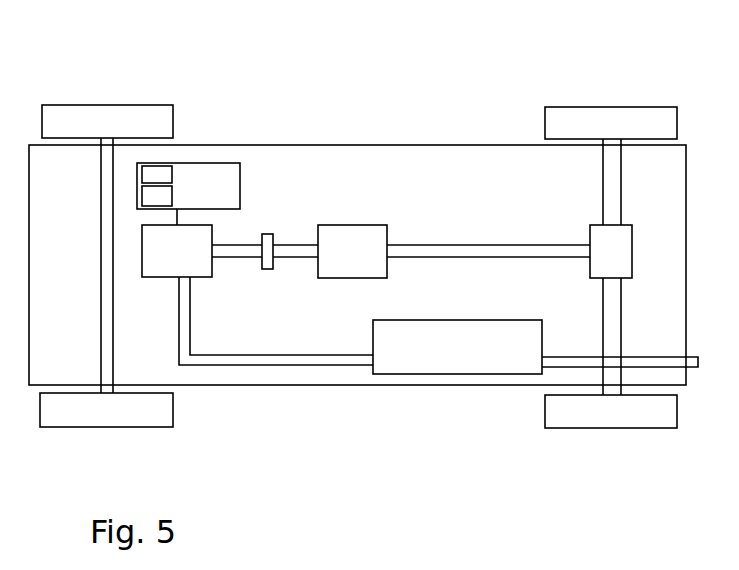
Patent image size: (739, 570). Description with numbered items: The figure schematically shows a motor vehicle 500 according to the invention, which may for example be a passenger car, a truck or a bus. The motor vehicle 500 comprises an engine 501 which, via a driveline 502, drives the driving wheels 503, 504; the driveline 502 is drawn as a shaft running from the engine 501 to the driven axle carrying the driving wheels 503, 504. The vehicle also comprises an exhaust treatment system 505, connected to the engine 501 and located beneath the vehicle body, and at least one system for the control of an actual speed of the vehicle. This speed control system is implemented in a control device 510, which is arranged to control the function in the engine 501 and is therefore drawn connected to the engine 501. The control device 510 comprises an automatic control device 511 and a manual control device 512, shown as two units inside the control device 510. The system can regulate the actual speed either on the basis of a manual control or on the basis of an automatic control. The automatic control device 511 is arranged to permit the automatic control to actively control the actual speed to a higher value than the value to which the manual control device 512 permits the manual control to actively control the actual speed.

The motor vehicle 500 is at (366, 54).
The engine 501 is at (160, 270).
The driveline 502 is at (338, 203).
The driving wheel 503 is at (555, 113).
The driving wheel 504 is at (548, 408).
The exhaust treatment system 505 is at (468, 370).
The control device 510 is at (188, 186).
The automatic control device 511 is at (170, 195).
The manual control device 512 is at (163, 177).